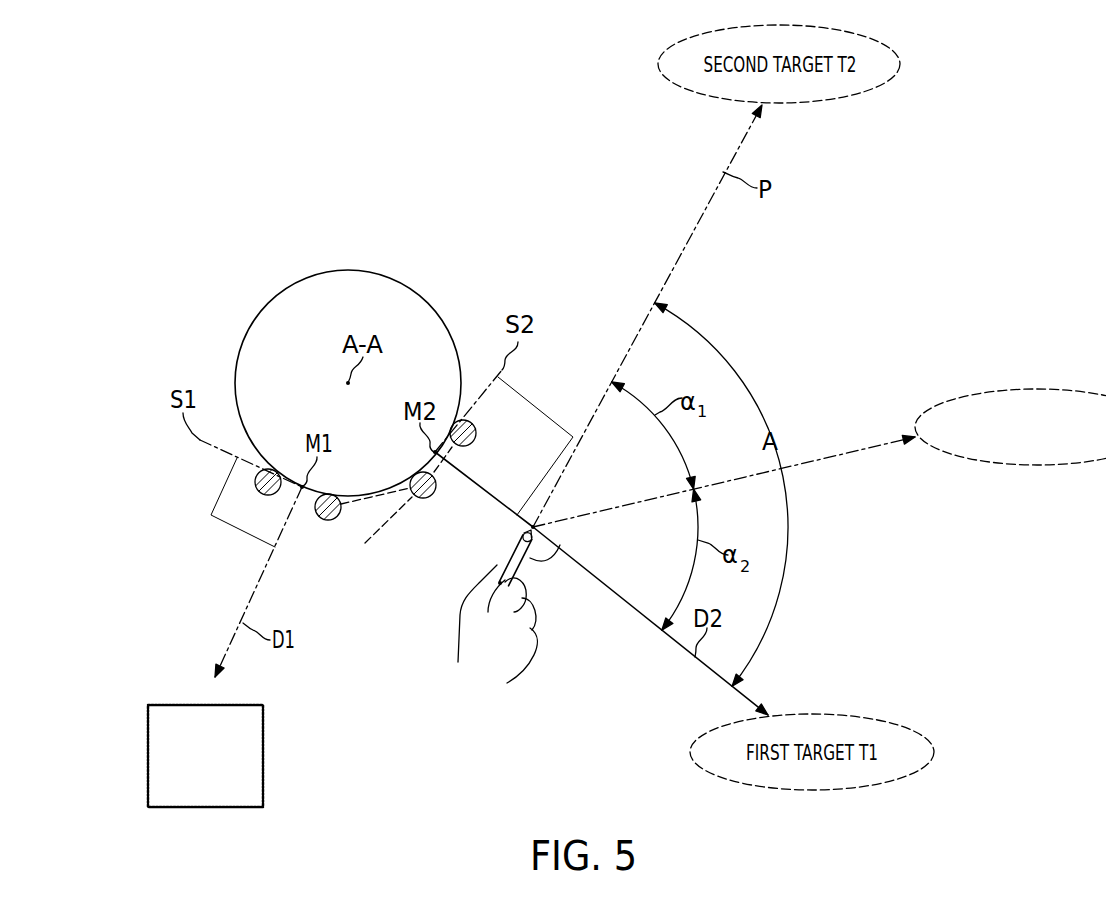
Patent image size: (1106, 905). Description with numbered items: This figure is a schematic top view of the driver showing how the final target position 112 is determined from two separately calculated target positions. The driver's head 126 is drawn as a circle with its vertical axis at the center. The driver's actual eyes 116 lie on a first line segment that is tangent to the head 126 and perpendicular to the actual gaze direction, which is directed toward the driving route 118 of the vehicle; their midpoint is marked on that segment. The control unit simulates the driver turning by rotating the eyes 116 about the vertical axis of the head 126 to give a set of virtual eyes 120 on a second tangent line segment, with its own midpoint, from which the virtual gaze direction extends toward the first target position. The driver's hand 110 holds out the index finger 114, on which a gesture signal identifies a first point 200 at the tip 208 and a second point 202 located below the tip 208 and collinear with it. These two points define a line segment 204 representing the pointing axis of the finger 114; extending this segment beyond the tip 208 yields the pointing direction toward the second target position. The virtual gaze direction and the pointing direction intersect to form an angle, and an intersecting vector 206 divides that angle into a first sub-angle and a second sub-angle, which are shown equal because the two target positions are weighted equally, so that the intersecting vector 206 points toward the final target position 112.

The head 126 is at (367, 272).
The eyes 116 is at (260, 496).
The virtual eyes 120 is at (476, 433).
The final target position 112 is at (1030, 390).
The driving route 118 is at (263, 752).
The index finger 114 is at (500, 583).
The line segment 204 is at (512, 550).
The first point 200 is at (536, 527).
The tip 208 is at (565, 541).
The intersecting vector 206 is at (855, 450).
The hand 110 is at (543, 633).
The second point 202 is at (485, 613).